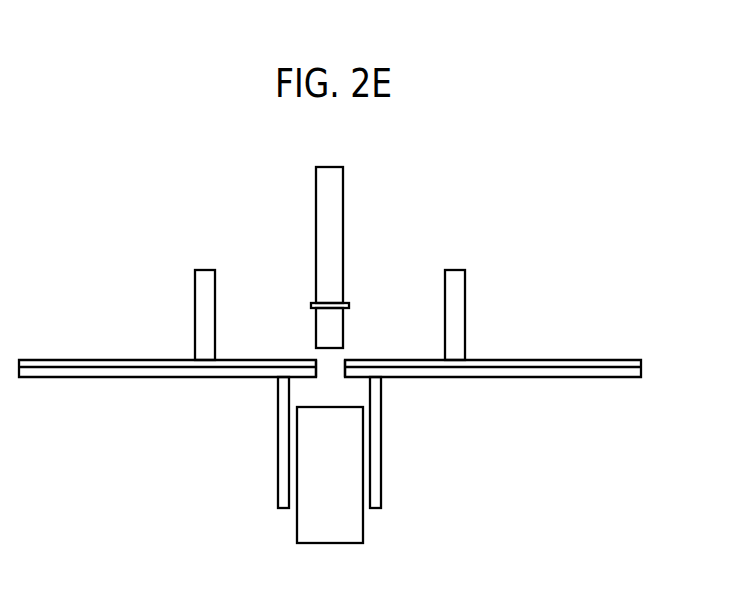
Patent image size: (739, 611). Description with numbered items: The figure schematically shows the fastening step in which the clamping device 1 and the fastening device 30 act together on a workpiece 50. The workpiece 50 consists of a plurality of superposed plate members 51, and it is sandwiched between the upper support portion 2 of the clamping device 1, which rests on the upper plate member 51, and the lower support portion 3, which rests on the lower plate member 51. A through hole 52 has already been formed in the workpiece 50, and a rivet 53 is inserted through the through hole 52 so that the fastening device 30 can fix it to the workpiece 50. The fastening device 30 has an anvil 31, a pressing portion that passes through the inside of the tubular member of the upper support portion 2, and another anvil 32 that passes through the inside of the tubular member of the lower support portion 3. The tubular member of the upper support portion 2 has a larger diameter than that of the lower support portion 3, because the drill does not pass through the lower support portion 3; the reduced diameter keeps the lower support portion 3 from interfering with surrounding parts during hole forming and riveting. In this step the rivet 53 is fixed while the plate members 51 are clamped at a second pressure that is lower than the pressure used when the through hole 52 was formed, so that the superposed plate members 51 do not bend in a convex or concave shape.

The clamping device 1 is at (489, 243).
The upper support portion 2 is at (195, 293).
The lower support portion 3 is at (278, 478).
The fastening device 30 is at (365, 203).
The anvil 31 is at (316, 206).
The anvil 32 is at (297, 527).
The workpiece 50 is at (587, 358).
The plate member 51 is at (62, 360).
The through hole 52 is at (320, 372).
The rivet 53 is at (347, 330).